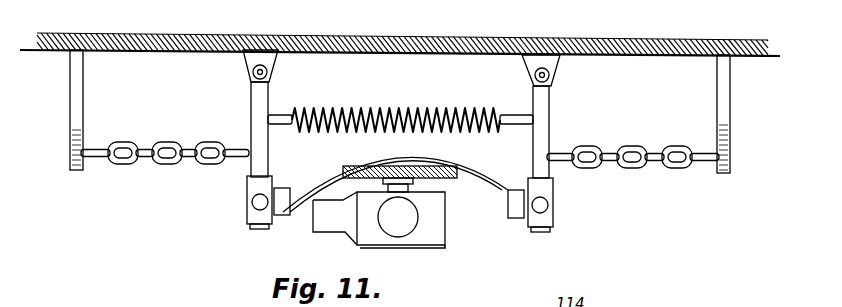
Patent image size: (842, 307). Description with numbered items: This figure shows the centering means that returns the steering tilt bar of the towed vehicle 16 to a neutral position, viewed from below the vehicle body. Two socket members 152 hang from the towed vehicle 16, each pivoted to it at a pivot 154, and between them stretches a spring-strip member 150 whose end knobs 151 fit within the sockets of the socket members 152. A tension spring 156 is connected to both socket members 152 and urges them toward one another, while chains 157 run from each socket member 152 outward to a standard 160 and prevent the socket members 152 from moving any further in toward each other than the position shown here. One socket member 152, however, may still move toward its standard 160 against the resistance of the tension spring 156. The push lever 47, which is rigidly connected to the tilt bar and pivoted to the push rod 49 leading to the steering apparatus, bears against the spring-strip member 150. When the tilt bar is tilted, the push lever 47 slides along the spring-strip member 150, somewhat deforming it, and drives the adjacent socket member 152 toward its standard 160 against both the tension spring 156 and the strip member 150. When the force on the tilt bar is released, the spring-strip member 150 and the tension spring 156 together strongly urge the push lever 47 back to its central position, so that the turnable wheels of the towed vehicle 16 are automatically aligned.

The towed vehicle 16 is at (54, 55).
The push lever 47 is at (453, 180).
The push rod 49 is at (330, 233).
The spring-strip member 150 is at (321, 170).
The knobs 151 is at (288, 215).
The socket members 152 is at (247, 205).
The pivot 154 is at (268, 72).
The tension spring 156 is at (415, 108).
The chains 157 is at (138, 166).
The standards 160 is at (80, 112).